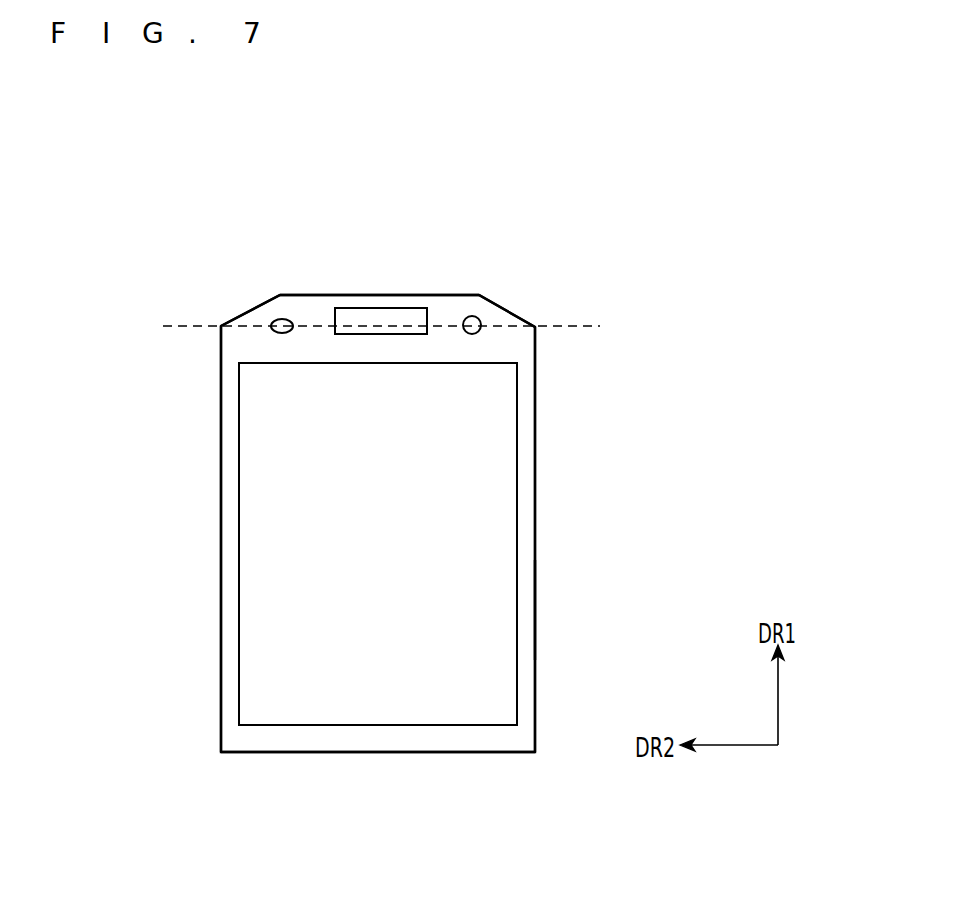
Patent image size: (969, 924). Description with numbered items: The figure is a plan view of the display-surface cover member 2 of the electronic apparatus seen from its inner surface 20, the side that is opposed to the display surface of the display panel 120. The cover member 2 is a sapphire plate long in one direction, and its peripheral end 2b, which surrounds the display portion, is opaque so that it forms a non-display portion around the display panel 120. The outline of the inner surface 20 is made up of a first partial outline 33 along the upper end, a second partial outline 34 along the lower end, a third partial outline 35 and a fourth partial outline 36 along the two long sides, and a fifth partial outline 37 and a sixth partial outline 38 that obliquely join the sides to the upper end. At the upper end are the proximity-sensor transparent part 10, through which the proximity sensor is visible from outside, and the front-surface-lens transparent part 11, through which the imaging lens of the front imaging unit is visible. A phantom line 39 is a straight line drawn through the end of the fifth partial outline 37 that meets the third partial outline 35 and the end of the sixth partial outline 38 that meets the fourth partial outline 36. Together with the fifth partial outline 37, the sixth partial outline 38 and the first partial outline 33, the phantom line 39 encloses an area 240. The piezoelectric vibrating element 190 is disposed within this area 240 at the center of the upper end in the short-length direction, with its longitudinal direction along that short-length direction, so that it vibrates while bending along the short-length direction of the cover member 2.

The display-surface cover member 2 is at (473, 288).
The peripheral end 2b is at (527, 632).
The proximity-sensor transparent part 10 is at (282, 318).
The front-surface-lens transparent part 11 is at (480, 318).
The inner surface 20 is at (527, 592).
The first partial outline 33 is at (339, 293).
The second partial outline 34 is at (378, 755).
The third partial outline 35 is at (220, 552).
The fourth partial outline 36 is at (537, 551).
The fifth partial outline 37 is at (245, 313).
The sixth partial outline 38 is at (518, 313).
The phantom line 39 is at (570, 327).
The display panel 120 is at (505, 494).
The piezoelectric vibrating element 190 is at (382, 308).
The area 240 is at (446, 313).